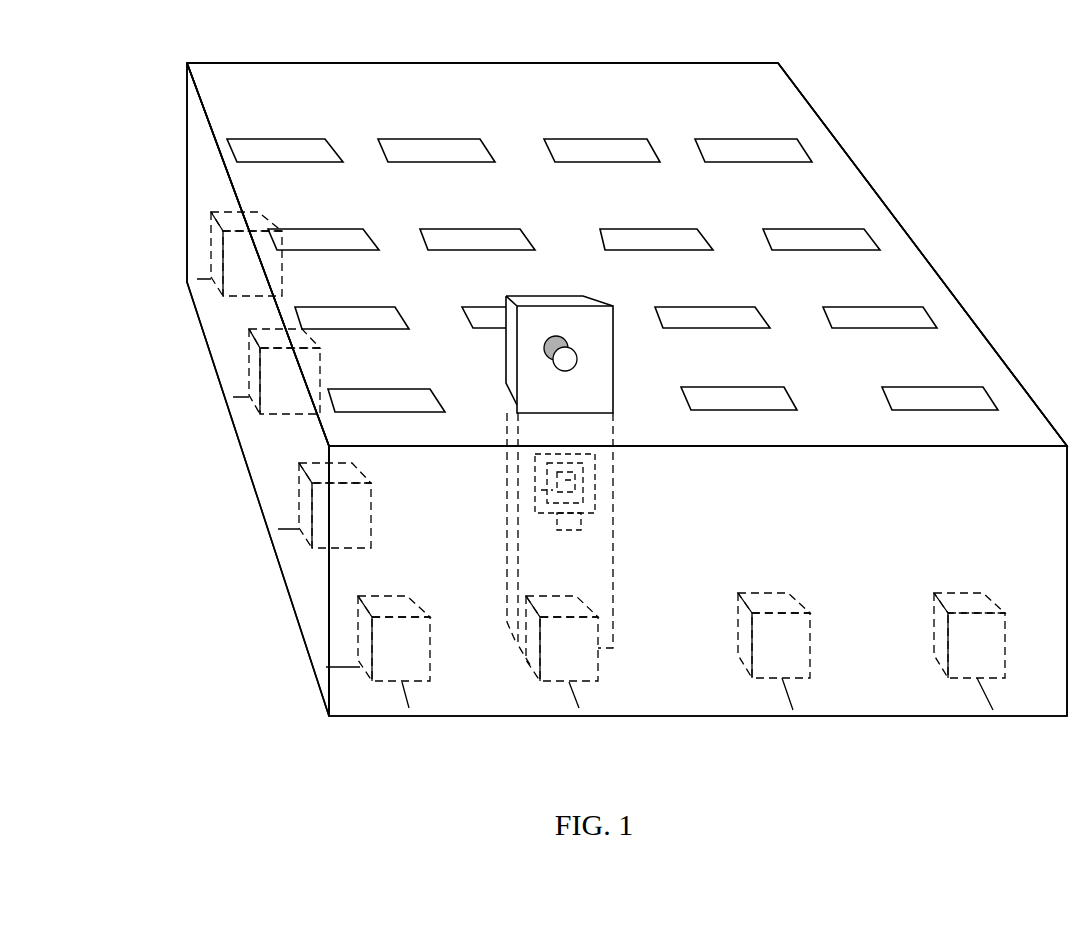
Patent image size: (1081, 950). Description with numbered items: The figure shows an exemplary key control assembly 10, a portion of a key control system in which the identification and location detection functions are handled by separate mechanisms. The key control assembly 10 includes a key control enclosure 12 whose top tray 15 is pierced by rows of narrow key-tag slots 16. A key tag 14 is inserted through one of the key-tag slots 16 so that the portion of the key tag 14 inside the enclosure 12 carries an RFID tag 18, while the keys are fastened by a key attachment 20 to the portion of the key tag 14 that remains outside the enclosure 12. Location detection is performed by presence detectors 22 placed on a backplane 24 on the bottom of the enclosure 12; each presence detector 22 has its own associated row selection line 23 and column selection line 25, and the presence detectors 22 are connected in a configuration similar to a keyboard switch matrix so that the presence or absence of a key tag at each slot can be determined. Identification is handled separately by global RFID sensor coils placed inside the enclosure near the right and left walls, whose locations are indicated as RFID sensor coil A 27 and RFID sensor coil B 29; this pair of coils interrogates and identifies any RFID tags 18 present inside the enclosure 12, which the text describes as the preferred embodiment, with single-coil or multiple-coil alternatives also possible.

The key control assembly 10 is at (897, 88).
The key control enclosure 12 is at (914, 248).
The key tag 14 is at (595, 307).
The top tray 15 is at (427, 106).
The key-tag slot 16 is at (562, 137).
The RFID tag 18 is at (593, 492).
The key attachment 20 is at (578, 357).
The presence detector 22 is at (608, 653).
The row selection line 23 is at (243, 398).
The backplane 24 is at (272, 460).
The column selection line 25 is at (412, 700).
The RFID sensor coil A 27 is at (355, 695).
The RFID sensor coil B 29 is at (293, 62).